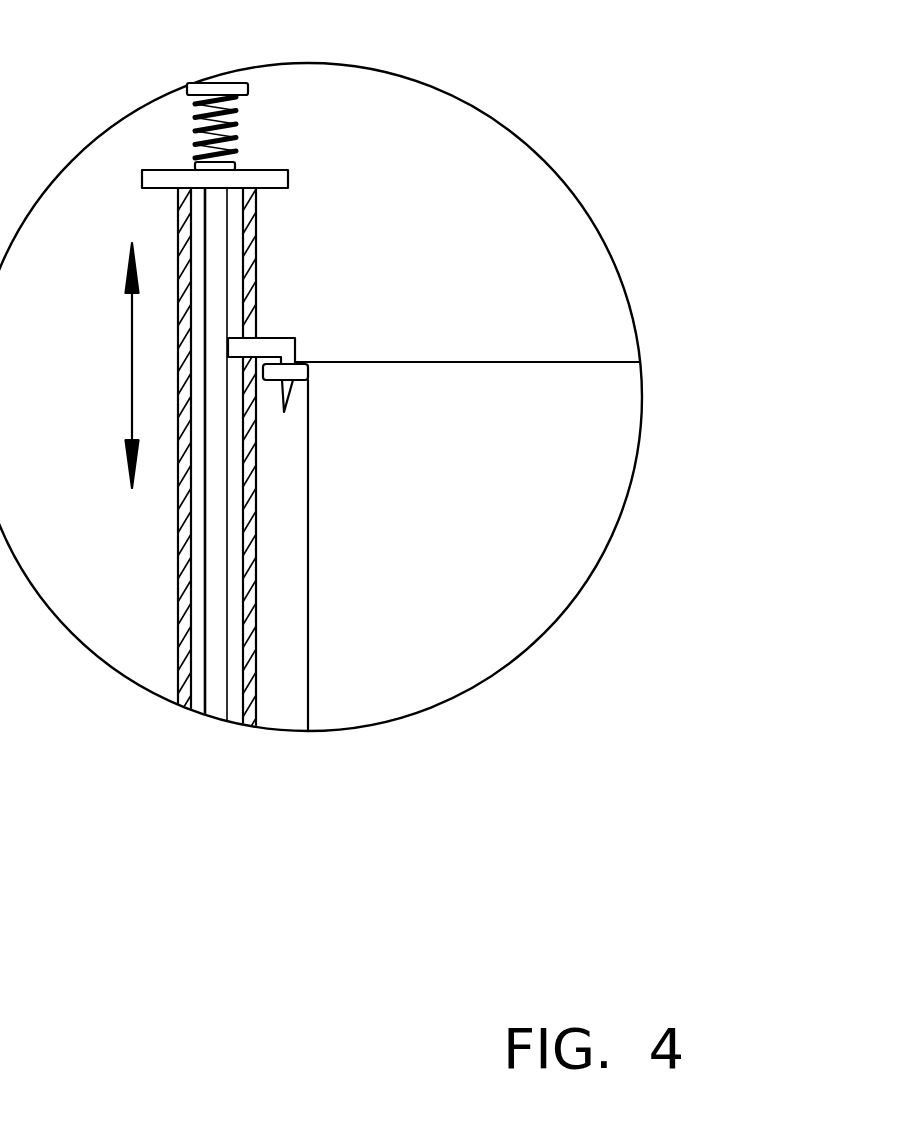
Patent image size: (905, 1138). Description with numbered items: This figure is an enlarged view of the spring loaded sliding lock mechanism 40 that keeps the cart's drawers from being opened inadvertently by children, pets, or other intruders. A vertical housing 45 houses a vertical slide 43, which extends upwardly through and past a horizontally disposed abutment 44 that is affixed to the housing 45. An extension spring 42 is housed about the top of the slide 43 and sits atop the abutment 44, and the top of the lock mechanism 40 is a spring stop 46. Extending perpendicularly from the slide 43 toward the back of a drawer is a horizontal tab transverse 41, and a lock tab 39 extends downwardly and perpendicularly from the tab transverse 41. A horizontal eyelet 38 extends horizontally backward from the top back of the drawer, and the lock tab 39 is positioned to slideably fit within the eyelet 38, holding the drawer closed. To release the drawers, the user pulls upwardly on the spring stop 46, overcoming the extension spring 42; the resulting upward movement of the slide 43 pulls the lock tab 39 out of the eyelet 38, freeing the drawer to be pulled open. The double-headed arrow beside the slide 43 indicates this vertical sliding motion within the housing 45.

The horizontal eyelet 38 is at (310, 380).
The lock tab 39 is at (290, 398).
The sliding lock mechanism 40 is at (537, 133).
The tab transverse 41 is at (281, 330).
The extension spring 42 is at (237, 150).
The vertical slide 43 is at (213, 485).
The abutment 44 is at (288, 186).
The vertical housing 45 is at (256, 627).
The spring stop 46 is at (248, 88).